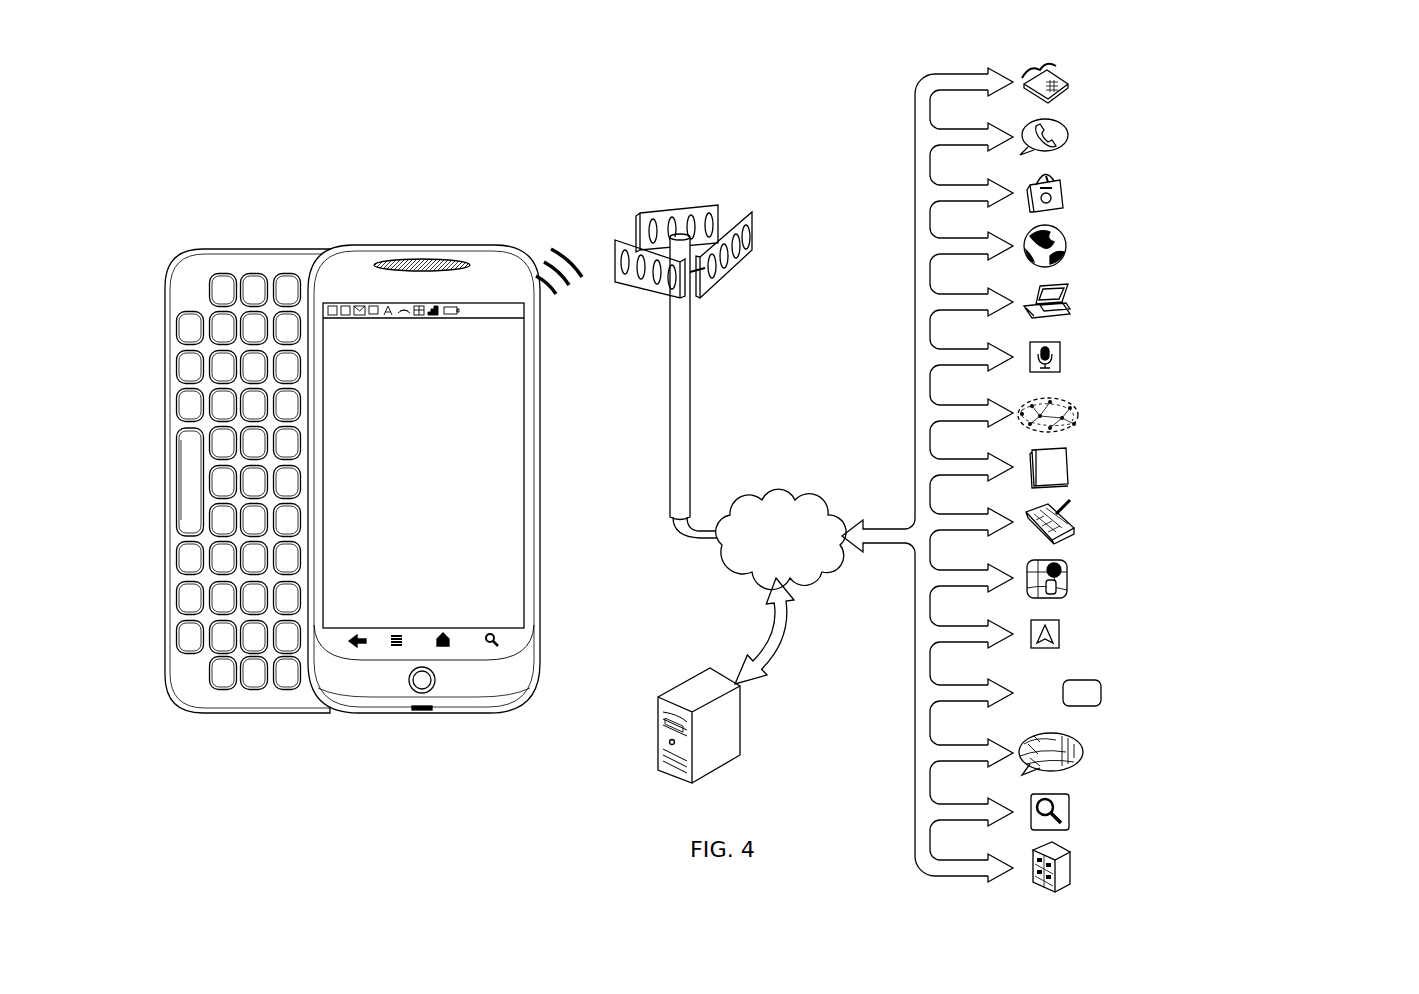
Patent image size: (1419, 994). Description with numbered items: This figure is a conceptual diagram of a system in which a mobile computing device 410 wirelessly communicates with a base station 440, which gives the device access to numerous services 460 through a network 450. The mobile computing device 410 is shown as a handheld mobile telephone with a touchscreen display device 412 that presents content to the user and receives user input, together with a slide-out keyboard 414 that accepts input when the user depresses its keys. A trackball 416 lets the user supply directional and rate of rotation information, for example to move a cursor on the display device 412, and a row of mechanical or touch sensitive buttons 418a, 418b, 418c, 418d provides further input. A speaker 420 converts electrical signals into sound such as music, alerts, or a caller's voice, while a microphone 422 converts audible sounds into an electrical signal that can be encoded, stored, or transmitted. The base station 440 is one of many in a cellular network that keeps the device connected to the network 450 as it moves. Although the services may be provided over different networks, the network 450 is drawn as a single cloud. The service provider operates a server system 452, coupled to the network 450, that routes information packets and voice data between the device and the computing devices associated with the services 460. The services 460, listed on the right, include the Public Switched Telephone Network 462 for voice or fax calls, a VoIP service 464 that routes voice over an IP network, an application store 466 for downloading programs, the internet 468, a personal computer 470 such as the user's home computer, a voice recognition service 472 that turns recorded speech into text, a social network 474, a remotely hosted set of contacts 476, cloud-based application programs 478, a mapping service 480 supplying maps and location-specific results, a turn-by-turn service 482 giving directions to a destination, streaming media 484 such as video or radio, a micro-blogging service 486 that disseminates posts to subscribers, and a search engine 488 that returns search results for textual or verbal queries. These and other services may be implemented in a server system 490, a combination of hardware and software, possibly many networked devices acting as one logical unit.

The mobile computing device 410 is at (479, 193).
The touchscreen display device 412 is at (524, 473).
The keyboard 414 is at (279, 248).
The trackball 416 is at (436, 683).
The button 418a is at (357, 633).
The button 418b is at (397, 633).
The button 418c is at (444, 633).
The button 418d is at (492, 633).
The speaker 420 is at (426, 260).
The microphone 422 is at (422, 713).
The base station 440 is at (737, 179).
The network 450 is at (778, 497).
The server system 452 is at (741, 726).
The services 460 is at (1360, 68).
The Public Switched Telephone Network 462 is at (1072, 87).
The Voice over Internet Protocol service 464 is at (1072, 142).
The application store 466 is at (1072, 198).
The internet 468 is at (1072, 251).
The personal computer 470 is at (1072, 307).
The voice recognition service 472 is at (1072, 362).
The social network 474 is at (1072, 418).
The contacts 476 is at (1072, 472).
The cloud-based application programs 478 is at (1072, 527).
The mapping service 480 is at (1072, 583).
The turn-by-turn service 482 is at (1072, 639).
The streaming media 484 is at (1080, 684).
The micro-blogging service 486 is at (1088, 744).
The search engine 488 is at (1072, 817).
The server system 490 is at (1072, 873).